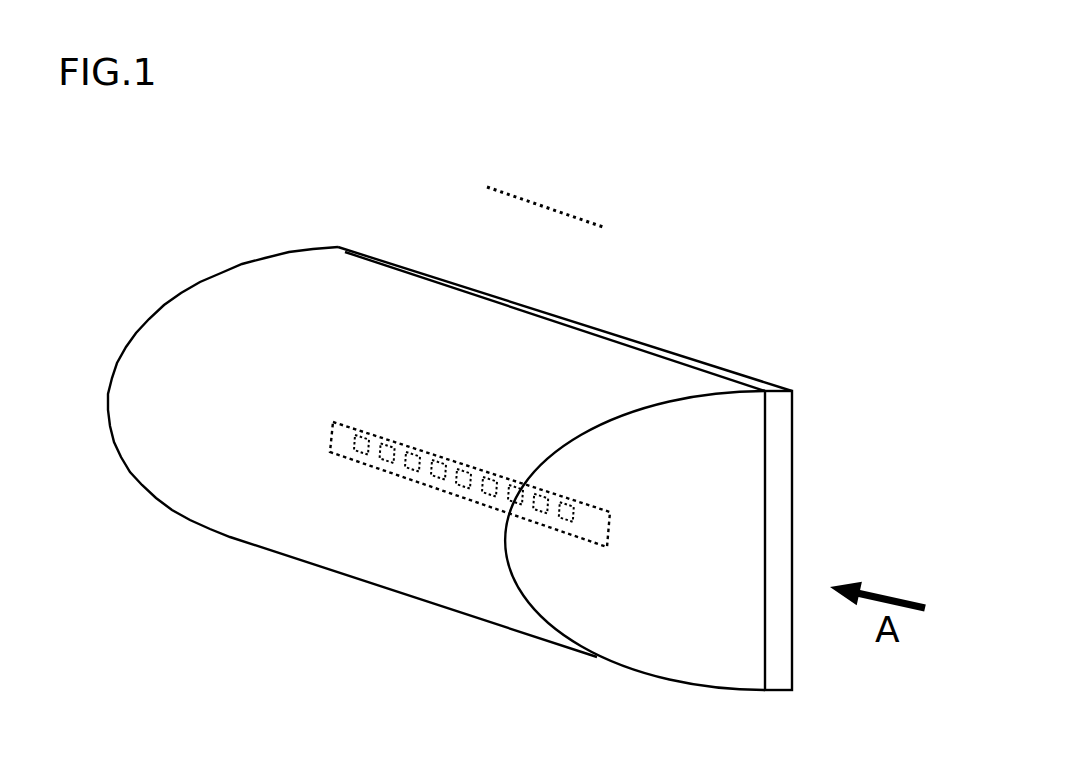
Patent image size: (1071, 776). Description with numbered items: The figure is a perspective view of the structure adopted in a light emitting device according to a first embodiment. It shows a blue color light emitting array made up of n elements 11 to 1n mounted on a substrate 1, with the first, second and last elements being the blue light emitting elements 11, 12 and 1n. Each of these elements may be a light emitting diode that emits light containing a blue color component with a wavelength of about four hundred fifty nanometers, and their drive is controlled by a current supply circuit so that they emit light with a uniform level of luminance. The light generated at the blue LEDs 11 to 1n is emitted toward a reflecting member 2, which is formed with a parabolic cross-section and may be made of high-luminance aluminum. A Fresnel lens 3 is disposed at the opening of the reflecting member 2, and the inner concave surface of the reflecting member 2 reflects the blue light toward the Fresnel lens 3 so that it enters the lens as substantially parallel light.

The substrate 1 is at (332, 450).
The blue color light emitting element 11 is at (568, 508).
The blue color light emitting element 12 is at (547, 493).
The blue color light emitting element 1n is at (367, 443).
The reflecting member 2 is at (398, 567).
The Fresnel lens 3 is at (778, 475).